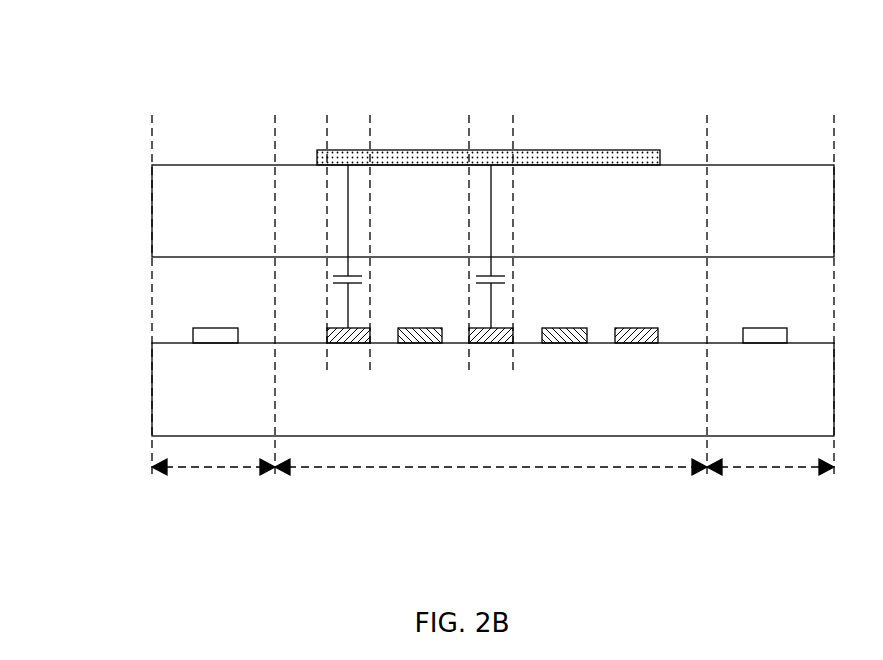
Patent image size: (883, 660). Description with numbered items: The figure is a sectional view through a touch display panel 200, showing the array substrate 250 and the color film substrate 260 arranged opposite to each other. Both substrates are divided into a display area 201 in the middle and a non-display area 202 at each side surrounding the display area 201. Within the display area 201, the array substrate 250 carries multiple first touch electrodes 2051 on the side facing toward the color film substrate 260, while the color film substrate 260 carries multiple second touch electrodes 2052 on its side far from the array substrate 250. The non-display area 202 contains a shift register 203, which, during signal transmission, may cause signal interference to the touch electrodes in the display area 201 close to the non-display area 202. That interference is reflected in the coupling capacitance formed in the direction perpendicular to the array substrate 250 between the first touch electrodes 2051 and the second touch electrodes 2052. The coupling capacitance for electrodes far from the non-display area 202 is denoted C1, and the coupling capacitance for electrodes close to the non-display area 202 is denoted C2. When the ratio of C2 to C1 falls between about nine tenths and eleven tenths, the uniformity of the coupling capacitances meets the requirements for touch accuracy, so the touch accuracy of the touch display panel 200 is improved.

The touch display panel 200 is at (130, 70).
The second touch electrodes 2052 is at (418, 156).
The color film substrate 260 is at (178, 183).
The array substrate 250 is at (180, 403).
The shift register 203 is at (201, 338).
The first touch electrodes 2051 is at (423, 328).
The coupling capacitance C2 is at (330, 277).
The coupling capacitance C1 is at (507, 281).
The non-display area 202 is at (493, 487).
The display area 201 is at (491, 487).